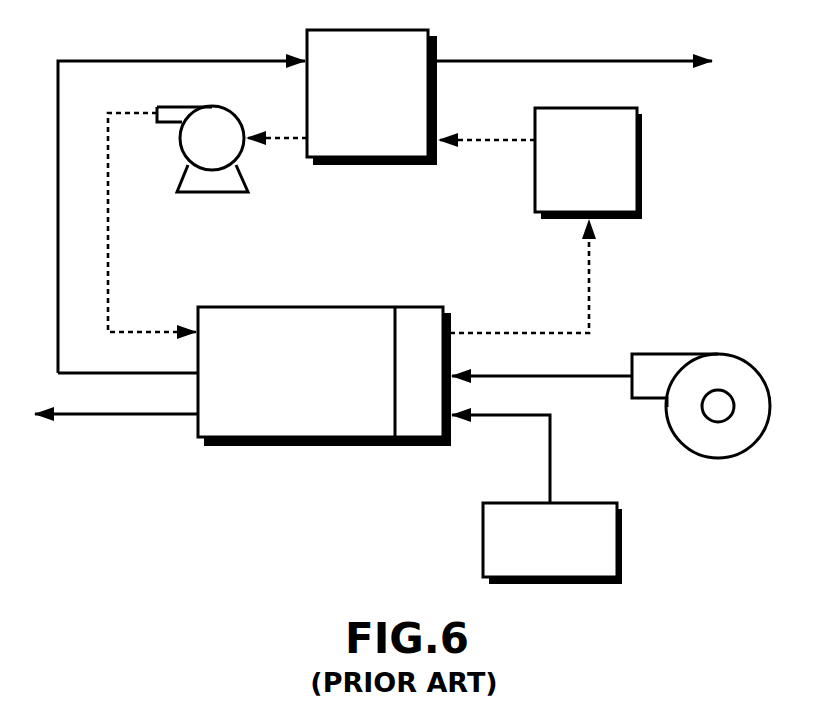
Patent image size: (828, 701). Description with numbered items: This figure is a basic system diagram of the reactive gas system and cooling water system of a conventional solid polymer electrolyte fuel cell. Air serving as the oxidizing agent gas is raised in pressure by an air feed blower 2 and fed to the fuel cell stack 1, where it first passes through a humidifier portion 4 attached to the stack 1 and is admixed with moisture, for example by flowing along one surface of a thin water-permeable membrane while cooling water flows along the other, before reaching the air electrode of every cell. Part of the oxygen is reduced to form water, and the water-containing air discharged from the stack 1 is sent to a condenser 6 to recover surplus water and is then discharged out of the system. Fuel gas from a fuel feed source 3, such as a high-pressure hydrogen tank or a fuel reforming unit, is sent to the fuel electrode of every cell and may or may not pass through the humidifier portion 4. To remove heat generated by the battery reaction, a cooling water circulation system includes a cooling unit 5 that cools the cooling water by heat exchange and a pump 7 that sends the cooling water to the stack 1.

The fuel cell stack 1 is at (297, 424).
The air feed blower 2 is at (710, 353).
The fuel feed source 3 is at (607, 547).
The humidifier portion 4 is at (425, 427).
The cooling unit 5 is at (627, 170).
The condenser 6 is at (408, 40).
The pump 7 is at (222, 122).